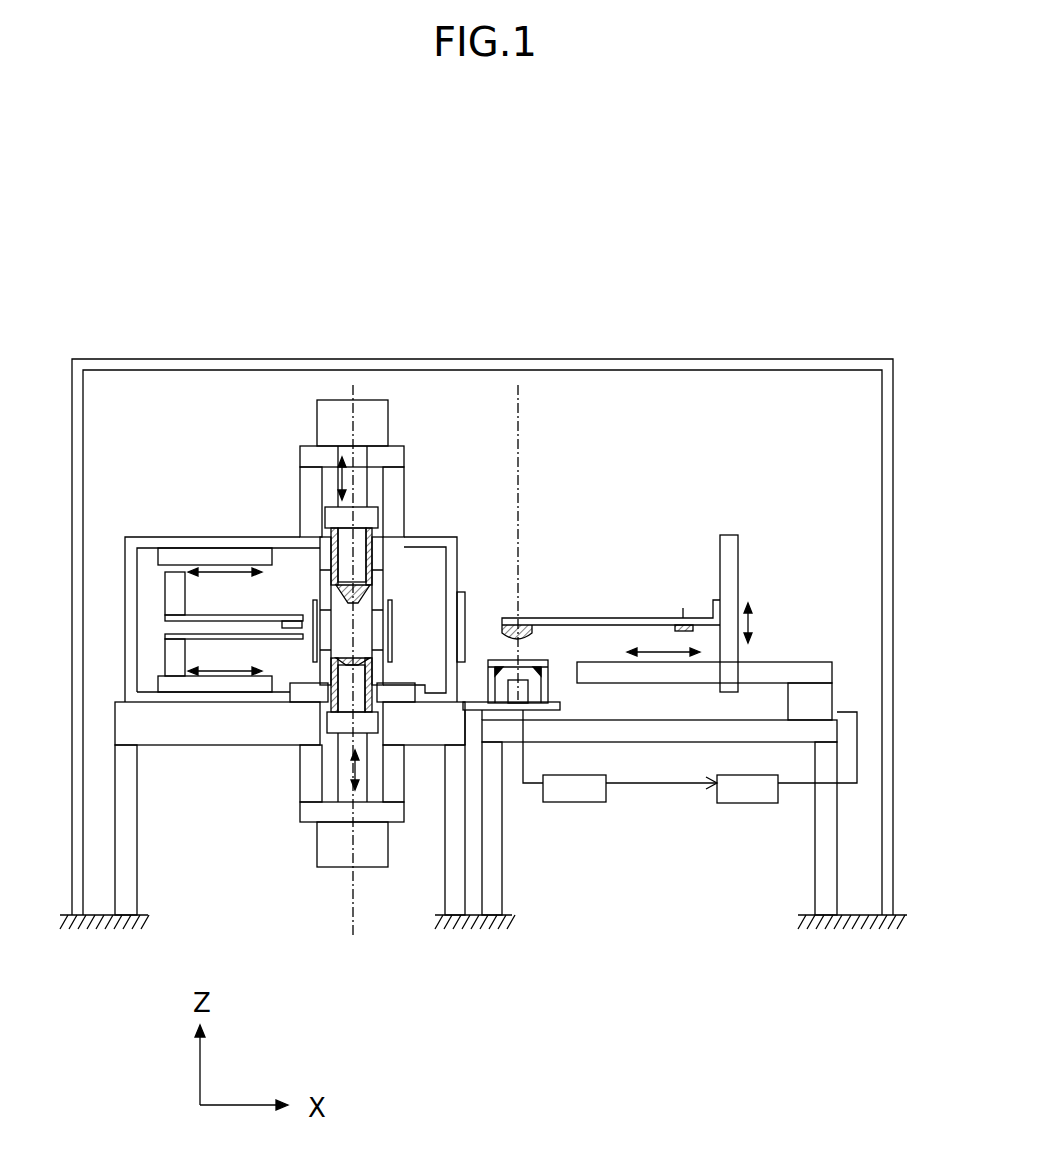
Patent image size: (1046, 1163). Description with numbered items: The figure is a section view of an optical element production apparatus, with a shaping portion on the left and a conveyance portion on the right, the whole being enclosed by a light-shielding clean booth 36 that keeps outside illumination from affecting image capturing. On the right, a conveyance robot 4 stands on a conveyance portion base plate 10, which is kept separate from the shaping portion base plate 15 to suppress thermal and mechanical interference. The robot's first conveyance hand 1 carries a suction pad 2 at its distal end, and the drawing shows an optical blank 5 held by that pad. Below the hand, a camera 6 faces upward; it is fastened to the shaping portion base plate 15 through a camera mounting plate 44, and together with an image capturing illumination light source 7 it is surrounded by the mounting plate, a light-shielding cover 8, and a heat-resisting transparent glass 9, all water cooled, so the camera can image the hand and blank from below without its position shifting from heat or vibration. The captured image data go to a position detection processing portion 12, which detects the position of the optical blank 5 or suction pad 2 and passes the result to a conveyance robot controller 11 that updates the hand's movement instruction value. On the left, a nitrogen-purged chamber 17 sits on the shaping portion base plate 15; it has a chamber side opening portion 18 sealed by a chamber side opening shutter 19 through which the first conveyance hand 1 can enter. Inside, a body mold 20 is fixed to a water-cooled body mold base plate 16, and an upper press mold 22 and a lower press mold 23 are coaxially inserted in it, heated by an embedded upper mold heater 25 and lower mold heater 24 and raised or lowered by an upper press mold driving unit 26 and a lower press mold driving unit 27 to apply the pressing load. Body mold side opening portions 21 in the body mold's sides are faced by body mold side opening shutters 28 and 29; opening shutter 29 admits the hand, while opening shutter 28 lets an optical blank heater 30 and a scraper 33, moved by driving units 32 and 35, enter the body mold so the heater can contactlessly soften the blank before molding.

The first conveyance hand 1 is at (685, 595).
The suction pad 2 is at (526, 590).
The conveyance robot 4 is at (705, 659).
The optical blank 5 is at (611, 599).
The camera 6 is at (551, 702).
The image capturing illumination light source 7 is at (481, 685).
The light-shielding cover 8 is at (577, 692).
The heat-resisting transparent glass 9 is at (527, 670).
The conveyance portion base plate 10 is at (651, 801).
The conveyance robot controller 11 is at (781, 791).
The position detection processing portion 12 is at (616, 821).
The shaping portion base plate 15 is at (290, 808).
The body mold base plate 16 is at (367, 677).
The nitrogen-purged chamber 17 is at (210, 586).
The chamber side opening portion 18 is at (449, 619).
The chamber side opening shutter 19 is at (488, 604).
The body mold 20 is at (426, 552).
The body mold side opening portions 21 is at (382, 611).
The upper press mold 22 is at (425, 540).
The lower press mold 23 is at (315, 727).
The lower mold heater 24 is at (336, 759).
The upper mold heater 25 is at (406, 491).
The upper press mold driving unit 26 is at (396, 417).
The lower press mold driving unit 27 is at (328, 849).
The body mold side opening shutter 28 is at (285, 573).
The body mold side opening shutter 29 is at (414, 616).
The optical blank heater 30 is at (234, 553).
The driving unit 32 is at (212, 518).
The scraper 33 is at (234, 709).
The driving unit 35 is at (215, 738).
The light-shielding clean booth 36 is at (482, 637).
The camera mounting plate 44 is at (473, 776).